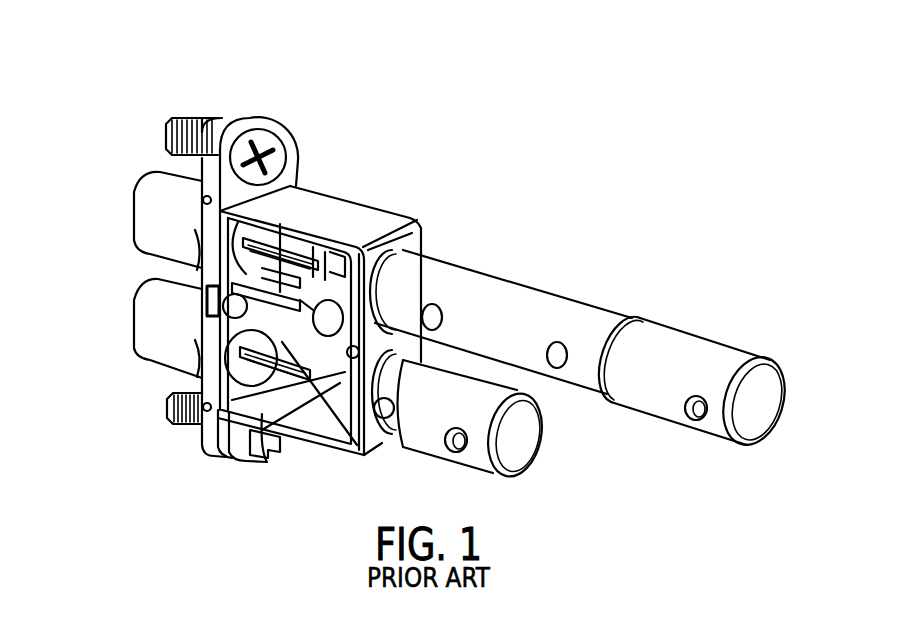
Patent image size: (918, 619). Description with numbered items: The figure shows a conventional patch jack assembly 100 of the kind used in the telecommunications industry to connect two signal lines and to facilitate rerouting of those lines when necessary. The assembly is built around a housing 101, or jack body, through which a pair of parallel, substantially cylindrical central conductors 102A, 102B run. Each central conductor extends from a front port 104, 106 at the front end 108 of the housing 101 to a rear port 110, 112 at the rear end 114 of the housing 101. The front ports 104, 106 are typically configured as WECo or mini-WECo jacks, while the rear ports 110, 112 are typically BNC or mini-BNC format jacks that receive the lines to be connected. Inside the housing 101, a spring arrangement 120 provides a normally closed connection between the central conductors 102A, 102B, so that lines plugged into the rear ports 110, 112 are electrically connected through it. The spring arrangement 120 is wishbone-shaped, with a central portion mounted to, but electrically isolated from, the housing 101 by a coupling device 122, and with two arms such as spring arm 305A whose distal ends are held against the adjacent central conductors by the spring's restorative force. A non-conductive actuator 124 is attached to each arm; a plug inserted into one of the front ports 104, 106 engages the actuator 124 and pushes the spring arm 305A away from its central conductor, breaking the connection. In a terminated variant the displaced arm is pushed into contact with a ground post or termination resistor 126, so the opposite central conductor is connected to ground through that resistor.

The patch jack assembly 100 is at (414, 126).
The housing 101 is at (333, 206).
The central conductor 102A is at (192, 428).
The central conductor 102B is at (339, 262).
The front port 104 is at (146, 320).
The front port 106 is at (146, 209).
The front end 108 is at (90, 345).
The rear port 110 is at (514, 432).
The rear port 112 is at (753, 402).
The rear end 114 is at (690, 473).
The spring arrangement 120 is at (279, 278).
The coupling device 122 is at (224, 311).
The actuator 124 is at (290, 372).
The termination resistor 126 is at (377, 291).
The spring arm 305A is at (335, 385).